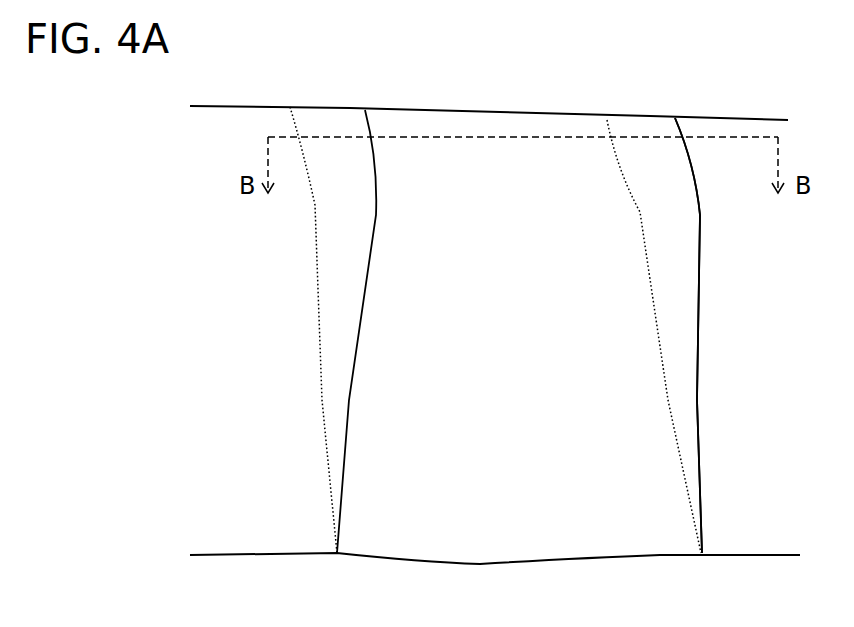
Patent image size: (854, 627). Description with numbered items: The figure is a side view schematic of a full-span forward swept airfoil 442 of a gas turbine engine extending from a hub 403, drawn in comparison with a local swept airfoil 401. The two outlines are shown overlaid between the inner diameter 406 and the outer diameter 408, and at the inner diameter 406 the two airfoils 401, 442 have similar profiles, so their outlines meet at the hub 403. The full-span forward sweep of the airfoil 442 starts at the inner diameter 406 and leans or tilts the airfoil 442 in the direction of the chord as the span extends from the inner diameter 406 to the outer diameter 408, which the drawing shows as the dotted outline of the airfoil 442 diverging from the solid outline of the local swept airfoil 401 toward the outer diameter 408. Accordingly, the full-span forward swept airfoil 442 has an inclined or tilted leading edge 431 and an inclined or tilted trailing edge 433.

The local swept airfoil 401 is at (697, 407).
The hub 403 is at (495, 579).
The inner diameter 406 is at (432, 546).
The outer diameter 408 is at (213, 135).
The leading edge 431 is at (321, 408).
The trailing edge 433 is at (645, 243).
The full-span forward swept airfoil 442 is at (595, 303).